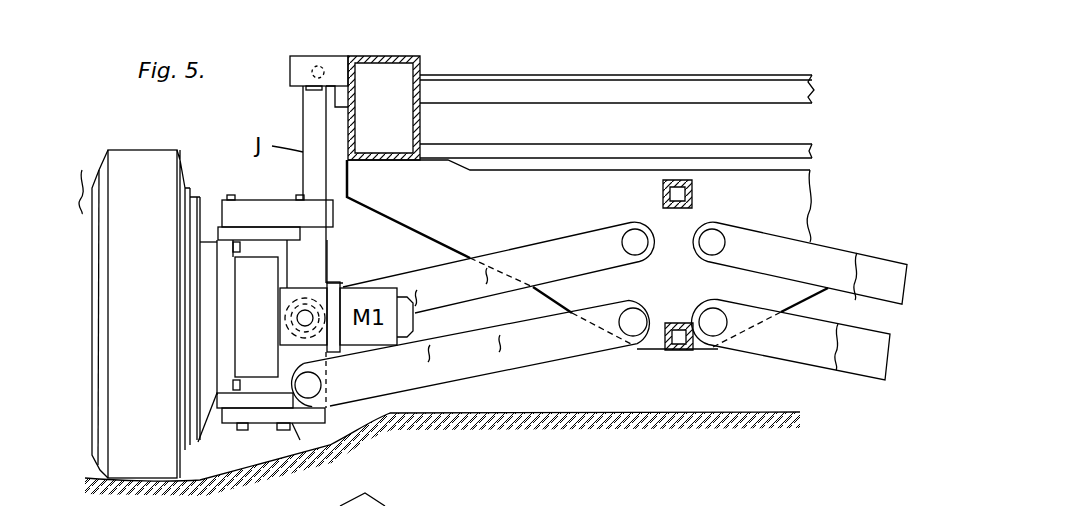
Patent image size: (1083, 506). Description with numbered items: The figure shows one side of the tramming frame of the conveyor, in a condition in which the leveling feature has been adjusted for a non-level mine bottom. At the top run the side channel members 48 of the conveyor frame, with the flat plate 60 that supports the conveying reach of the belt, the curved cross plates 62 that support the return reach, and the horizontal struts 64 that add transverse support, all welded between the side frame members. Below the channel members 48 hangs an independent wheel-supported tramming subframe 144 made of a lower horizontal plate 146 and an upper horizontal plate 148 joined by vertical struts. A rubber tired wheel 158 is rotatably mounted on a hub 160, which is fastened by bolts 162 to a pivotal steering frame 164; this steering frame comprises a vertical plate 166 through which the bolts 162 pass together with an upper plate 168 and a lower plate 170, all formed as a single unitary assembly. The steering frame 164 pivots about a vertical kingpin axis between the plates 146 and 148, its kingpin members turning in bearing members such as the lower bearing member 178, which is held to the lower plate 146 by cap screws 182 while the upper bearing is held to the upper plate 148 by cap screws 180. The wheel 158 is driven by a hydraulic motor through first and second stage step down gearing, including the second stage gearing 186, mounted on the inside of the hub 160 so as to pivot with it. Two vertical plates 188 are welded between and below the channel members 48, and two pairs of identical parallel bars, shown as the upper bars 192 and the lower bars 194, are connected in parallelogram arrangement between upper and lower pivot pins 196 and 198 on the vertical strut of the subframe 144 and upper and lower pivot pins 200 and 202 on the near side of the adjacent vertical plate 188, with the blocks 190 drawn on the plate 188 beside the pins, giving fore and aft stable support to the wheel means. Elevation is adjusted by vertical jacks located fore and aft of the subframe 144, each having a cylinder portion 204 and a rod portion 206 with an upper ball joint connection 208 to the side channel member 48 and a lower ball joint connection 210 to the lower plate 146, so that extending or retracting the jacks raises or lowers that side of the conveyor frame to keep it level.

The side channel members 48 is at (394, 56).
The flat plate 60 is at (648, 75).
The curved cross plates 62 is at (812, 152).
The horizontal struts 64 is at (814, 90).
The tramming subframe 144 is at (255, 124).
The lower horizontal plate 146 is at (305, 430).
The upper horizontal plate 148 is at (270, 208).
The rubber tired wheel 158 is at (82, 172).
The hub 160 is at (208, 205).
The bolts 162 is at (233, 246).
The pivotal steering frame 164 is at (314, 235).
The vertical plate 166 is at (225, 289).
The upper plate 168 is at (257, 317).
The lower plate 170 is at (222, 400).
The lower bearing member 178 is at (270, 432).
The cap screws 180 is at (259, 303).
The cap screws 182 is at (246, 430).
The second stage step down gearing 186 is at (259, 331).
The vertical plates 188 is at (587, 253).
The stop block 190 is at (692, 193).
The upper link 192 is at (625, 267).
The lower link 194 is at (591, 352).
The upper pivot pin 196 is at (357, 279).
The lower pivot pin 198 is at (312, 383).
The upper pivot pin 200 is at (710, 240).
The lower pivot pin 202 is at (710, 318).
The cylinder portion 204 is at (345, 240).
The rod portion 206 is at (312, 118).
The upper ball joint connection 208 is at (320, 64).
The lower ball joint connection 210 is at (358, 425).